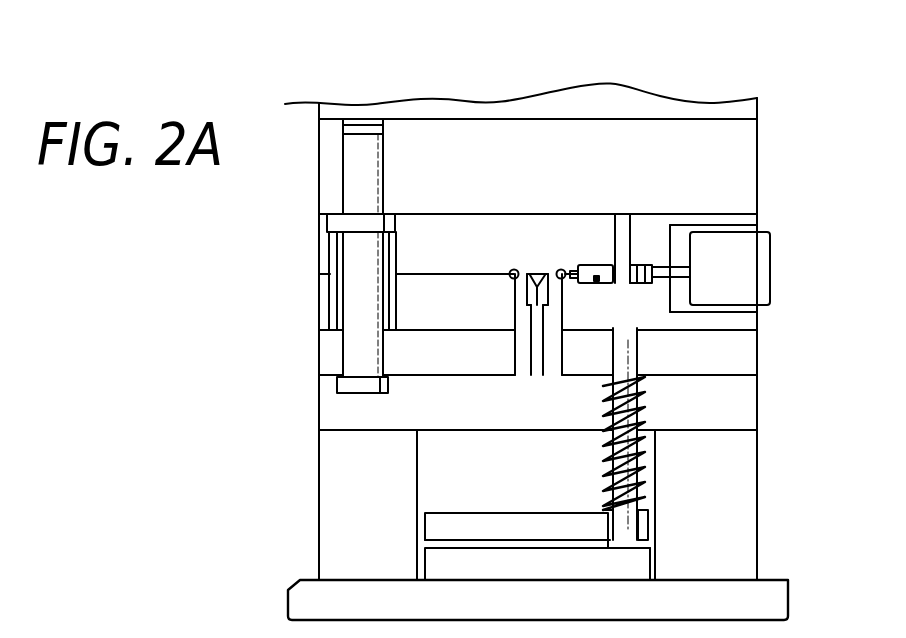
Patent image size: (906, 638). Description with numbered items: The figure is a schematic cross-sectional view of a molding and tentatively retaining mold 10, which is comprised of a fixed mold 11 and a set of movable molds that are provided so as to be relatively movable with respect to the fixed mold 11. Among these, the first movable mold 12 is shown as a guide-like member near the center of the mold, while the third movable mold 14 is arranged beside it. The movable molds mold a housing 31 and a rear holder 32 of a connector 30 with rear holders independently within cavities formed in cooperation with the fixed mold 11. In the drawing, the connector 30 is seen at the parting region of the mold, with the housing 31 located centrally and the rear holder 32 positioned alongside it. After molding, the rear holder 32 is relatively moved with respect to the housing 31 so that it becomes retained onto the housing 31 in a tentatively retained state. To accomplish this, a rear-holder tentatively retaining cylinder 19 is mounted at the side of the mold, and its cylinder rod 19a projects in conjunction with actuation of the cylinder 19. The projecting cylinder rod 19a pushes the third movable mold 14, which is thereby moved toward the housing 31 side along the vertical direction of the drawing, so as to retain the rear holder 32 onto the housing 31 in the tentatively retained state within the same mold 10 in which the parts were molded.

The molding and tentatively retaining mold 10 is at (544, 88).
The fixed mold 11 is at (412, 247).
The first movable mold 12 is at (518, 344).
The third movable mold 14 is at (599, 279).
The rear-holder tentatively retaining cylinder 19 is at (748, 280).
The cylinder rod 19a is at (666, 267).
The connector with rear holders 30 is at (530, 255).
The housing 31 is at (523, 295).
The rear holder 32 is at (514, 269).